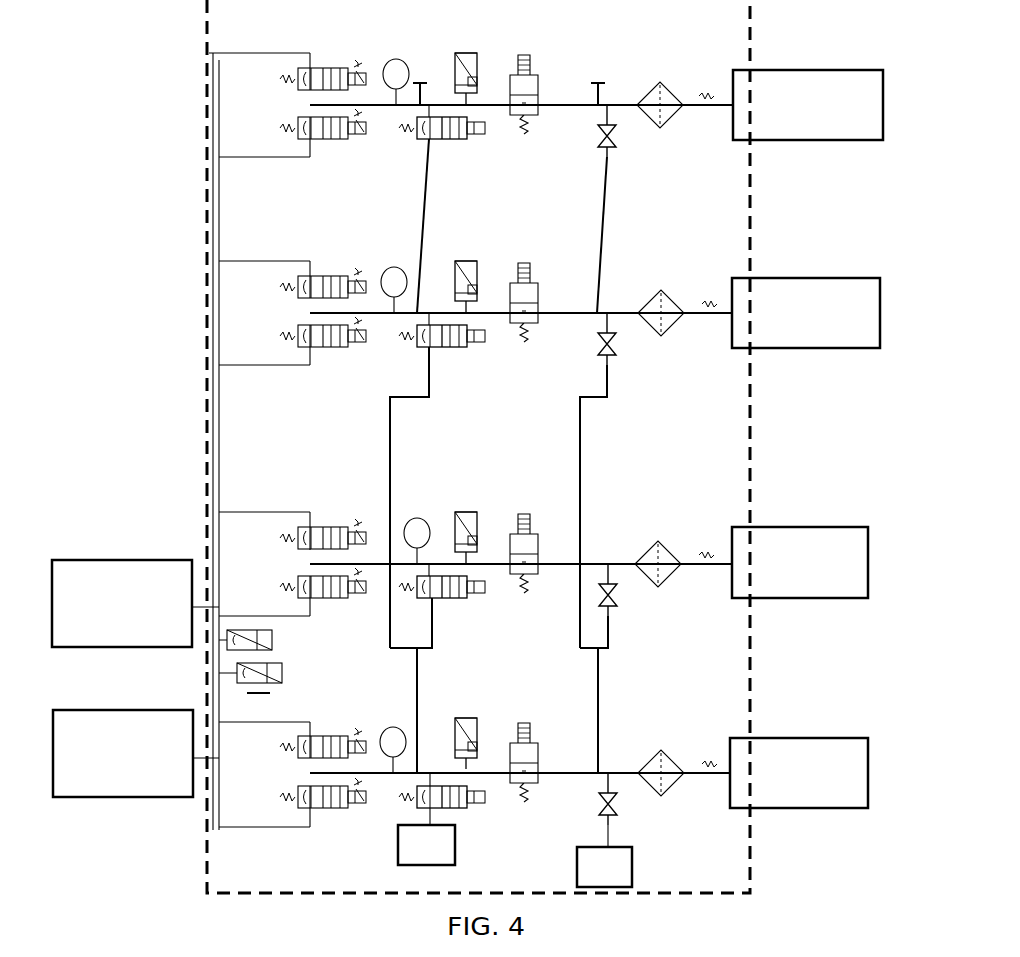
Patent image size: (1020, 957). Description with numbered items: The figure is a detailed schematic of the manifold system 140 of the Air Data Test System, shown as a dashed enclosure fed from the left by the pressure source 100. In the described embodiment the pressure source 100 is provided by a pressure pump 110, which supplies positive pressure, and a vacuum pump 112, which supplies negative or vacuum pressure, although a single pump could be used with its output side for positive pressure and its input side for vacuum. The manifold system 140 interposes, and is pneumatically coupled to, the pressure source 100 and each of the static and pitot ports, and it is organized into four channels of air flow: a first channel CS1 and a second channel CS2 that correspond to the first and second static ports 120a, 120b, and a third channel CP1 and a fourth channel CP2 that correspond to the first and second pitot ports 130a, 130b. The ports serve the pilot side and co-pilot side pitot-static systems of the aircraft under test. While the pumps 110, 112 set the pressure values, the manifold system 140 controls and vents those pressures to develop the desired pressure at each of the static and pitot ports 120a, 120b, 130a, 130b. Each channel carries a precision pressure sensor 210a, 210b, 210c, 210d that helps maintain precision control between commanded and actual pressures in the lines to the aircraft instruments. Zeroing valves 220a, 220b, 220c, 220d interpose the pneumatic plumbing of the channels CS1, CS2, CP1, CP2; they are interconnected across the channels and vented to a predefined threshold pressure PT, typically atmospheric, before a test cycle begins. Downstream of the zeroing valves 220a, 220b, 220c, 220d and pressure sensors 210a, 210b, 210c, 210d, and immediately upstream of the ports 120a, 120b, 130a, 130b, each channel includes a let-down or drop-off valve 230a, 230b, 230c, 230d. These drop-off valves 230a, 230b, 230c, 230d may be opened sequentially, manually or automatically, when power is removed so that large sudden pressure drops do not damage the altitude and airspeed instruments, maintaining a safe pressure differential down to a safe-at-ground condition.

The manifold system 140 is at (207, 165).
The pressure source 100 is at (122, 622).
The vacuum pump 112 is at (73, 578).
The pressure pump 110 is at (170, 720).
The pressure sensor 210a is at (471, 743).
The pressure sensor 210b is at (471, 523).
The pressure sensor 210c is at (474, 283).
The pressure sensor 210d is at (473, 73).
The zeroing valve 220a is at (471, 797).
The zeroing valve 220b is at (471, 588).
The zeroing valve 220c is at (472, 337).
The zeroing valve 220d is at (472, 127).
The drop-off valve 230a is at (616, 804).
The drop-off valve 230b is at (614, 606).
The drop-off valve 230c is at (616, 353).
The drop-off valve 230d is at (616, 156).
The first pitot port 130a is at (847, 582).
The second pitot port 130b is at (847, 123).
The first static port 120a is at (850, 785).
The second static port 120b is at (847, 337).
The third channel CP1 is at (703, 555).
The fourth channel CP2 is at (706, 92).
The first channel CS1 is at (708, 755).
The second channel CS2 is at (708, 296).